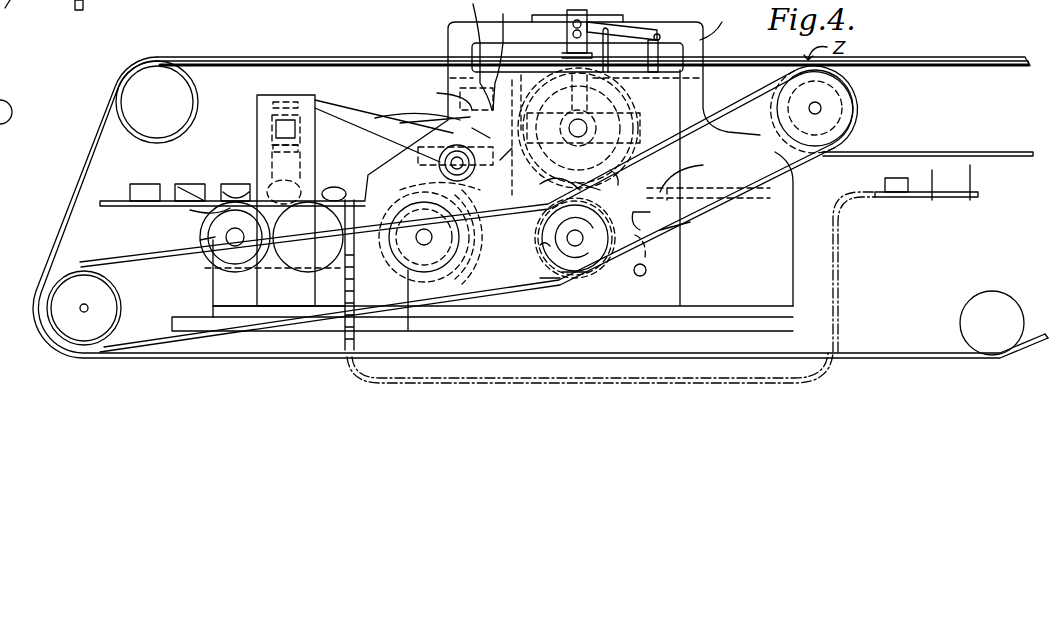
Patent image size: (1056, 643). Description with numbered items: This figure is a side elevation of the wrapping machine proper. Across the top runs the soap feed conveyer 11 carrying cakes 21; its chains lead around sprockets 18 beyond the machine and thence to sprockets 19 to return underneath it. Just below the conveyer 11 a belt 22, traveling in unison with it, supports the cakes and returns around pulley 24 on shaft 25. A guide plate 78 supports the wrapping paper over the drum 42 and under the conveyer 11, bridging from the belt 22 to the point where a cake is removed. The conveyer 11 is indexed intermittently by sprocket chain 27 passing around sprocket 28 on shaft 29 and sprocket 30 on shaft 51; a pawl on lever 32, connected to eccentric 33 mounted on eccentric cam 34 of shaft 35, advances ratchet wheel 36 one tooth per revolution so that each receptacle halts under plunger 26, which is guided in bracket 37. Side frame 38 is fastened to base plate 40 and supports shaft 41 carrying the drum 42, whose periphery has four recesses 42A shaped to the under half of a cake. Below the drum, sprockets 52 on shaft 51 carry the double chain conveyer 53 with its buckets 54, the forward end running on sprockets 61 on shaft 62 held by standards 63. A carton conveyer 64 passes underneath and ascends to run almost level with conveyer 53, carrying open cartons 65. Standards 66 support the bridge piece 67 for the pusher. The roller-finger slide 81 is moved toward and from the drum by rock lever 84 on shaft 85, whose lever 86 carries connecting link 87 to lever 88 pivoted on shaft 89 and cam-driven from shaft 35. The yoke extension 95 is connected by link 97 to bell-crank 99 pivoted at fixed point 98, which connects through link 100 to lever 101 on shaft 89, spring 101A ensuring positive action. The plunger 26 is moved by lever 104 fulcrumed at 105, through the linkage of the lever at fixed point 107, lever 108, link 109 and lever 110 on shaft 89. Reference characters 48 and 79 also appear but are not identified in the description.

The conveyer 11 is at (938, 61).
The sprockets 18 is at (130, 100).
The sprockets 19 is at (50, 330).
The cakes 21 is at (333, 190).
The belt 22 is at (905, 67).
The pulley 24 is at (854, 91).
The shaft 25 is at (812, 110).
The plunger 26 is at (586, 20).
The sprocket chain 27 is at (112, 266).
The sprocket 28 is at (116, 307).
The shaft 29 is at (87, 304).
The sprocket 30 is at (548, 248).
The lever 32 is at (585, 255).
The eccentric 33 is at (484, 237).
The eccentric cam 34 is at (408, 270).
The shaft 35 is at (424, 237).
The ratchet wheel 36 is at (550, 274).
The bracket 37 is at (570, 14).
The side frame 38 is at (682, 280).
The base plate 40 is at (785, 326).
The shaft 41 is at (585, 125).
The drum 42 is at (600, 140).
The recesses 42A is at (572, 84).
The gear 48 is at (612, 178).
The shaft 51 is at (573, 238).
The sprockets 52 is at (575, 274).
The double chain conveyer 53 is at (205, 242).
The buckets 54 is at (193, 222).
The sprockets 61 is at (193, 192).
The shaft 62 is at (242, 229).
The standards 63 is at (212, 287).
The conveyer 64 is at (115, 197).
The open carton 65 is at (233, 190).
The standards 66 is at (265, 103).
The bridge piece 67 is at (290, 131).
The guide plate 78 is at (448, 65).
The rods 79 is at (745, 198).
The horizontal slide 81 is at (692, 173).
The rock lever 84 is at (686, 226).
The shaft 85 is at (640, 277).
The lever 86 is at (646, 256).
The connecting link 87 is at (651, 217).
The lever 88 is at (444, 190).
The shaft 89 is at (450, 152).
The extension 95 is at (630, 173).
The link 97 is at (549, 189).
The fixed point 98 is at (520, 88).
The bell-crank 99 is at (535, 97).
The link 100 is at (507, 55).
The lever 101 is at (440, 98).
The spring 101A is at (415, 107).
The lever 104 is at (630, 38).
The fulcrum 105 is at (723, 20).
The fixed point 107 is at (510, 165).
The lever 108 is at (493, 139).
The link 109 is at (473, 55).
The lever 110 is at (420, 123).